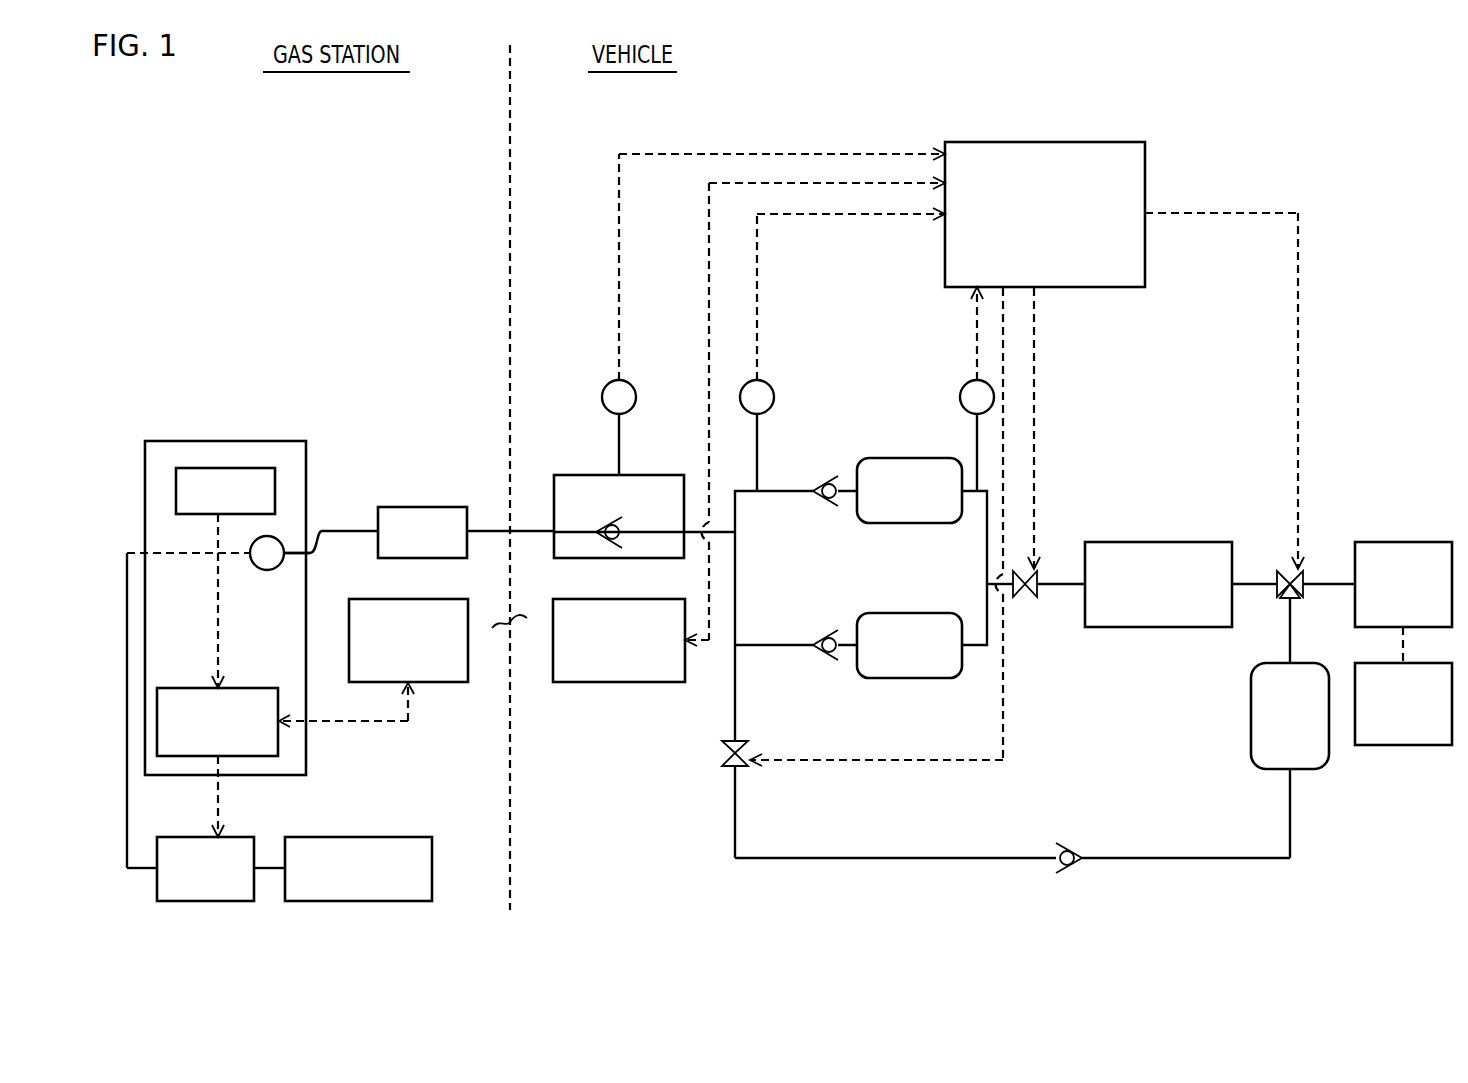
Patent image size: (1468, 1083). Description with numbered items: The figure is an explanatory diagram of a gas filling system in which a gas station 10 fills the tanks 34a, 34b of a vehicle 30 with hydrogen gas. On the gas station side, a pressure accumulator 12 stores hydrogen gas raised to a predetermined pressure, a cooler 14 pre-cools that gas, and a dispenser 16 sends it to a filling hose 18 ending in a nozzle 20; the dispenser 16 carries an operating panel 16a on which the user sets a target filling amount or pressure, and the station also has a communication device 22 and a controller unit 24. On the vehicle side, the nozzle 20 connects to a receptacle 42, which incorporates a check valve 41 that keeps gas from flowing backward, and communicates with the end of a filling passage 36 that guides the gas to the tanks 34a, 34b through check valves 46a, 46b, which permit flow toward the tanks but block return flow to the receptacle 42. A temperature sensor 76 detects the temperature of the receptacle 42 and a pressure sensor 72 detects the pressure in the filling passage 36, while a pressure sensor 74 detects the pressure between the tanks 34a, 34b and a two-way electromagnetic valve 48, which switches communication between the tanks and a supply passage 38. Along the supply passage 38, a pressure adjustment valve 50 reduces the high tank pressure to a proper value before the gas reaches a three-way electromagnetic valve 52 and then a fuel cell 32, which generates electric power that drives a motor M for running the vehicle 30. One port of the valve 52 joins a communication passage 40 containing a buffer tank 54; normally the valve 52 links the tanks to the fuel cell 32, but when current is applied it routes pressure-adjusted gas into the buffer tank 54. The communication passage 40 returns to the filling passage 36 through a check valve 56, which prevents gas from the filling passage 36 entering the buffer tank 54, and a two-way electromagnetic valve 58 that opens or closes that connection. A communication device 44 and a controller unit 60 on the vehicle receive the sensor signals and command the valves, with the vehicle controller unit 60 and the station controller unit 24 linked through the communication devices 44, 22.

The gas station 10 is at (425, 433).
The pressure accumulator 12 is at (422, 835).
The cooler 14 is at (247, 835).
The dispenser 16 is at (185, 441).
The operating panel 16a is at (245, 467).
The filling hose 18 is at (367, 530).
The nozzle 20 is at (453, 507).
The communication device 22 is at (460, 684).
The controller unit 24 is at (262, 688).
The vehicle 30 is at (1347, 128).
The fuel cell 32 is at (1415, 542).
The tank 34a is at (900, 458).
The tank 34b is at (900, 612).
The filling passage 36 is at (737, 518).
The supply passage 38 is at (1040, 577).
The communication passage 40 is at (1143, 858).
The check valve 41 is at (605, 527).
The receptacle 42 is at (657, 475).
The communication device 44 is at (648, 685).
The check valve 46a is at (828, 500).
The check valve 46b is at (827, 654).
The valve 48 is at (1020, 597).
The pressure adjustment valve 50 is at (1198, 542).
The valve 52 is at (1302, 593).
The buffer tank 54 is at (1278, 772).
The check valve 56 is at (1063, 847).
The valve 58 is at (740, 738).
The controller unit 60 is at (1145, 158).
The pressure sensor 72 is at (762, 378).
The pressure sensor 74 is at (968, 382).
The temperature sensor 76 is at (627, 378).
The motor M is at (1395, 747).